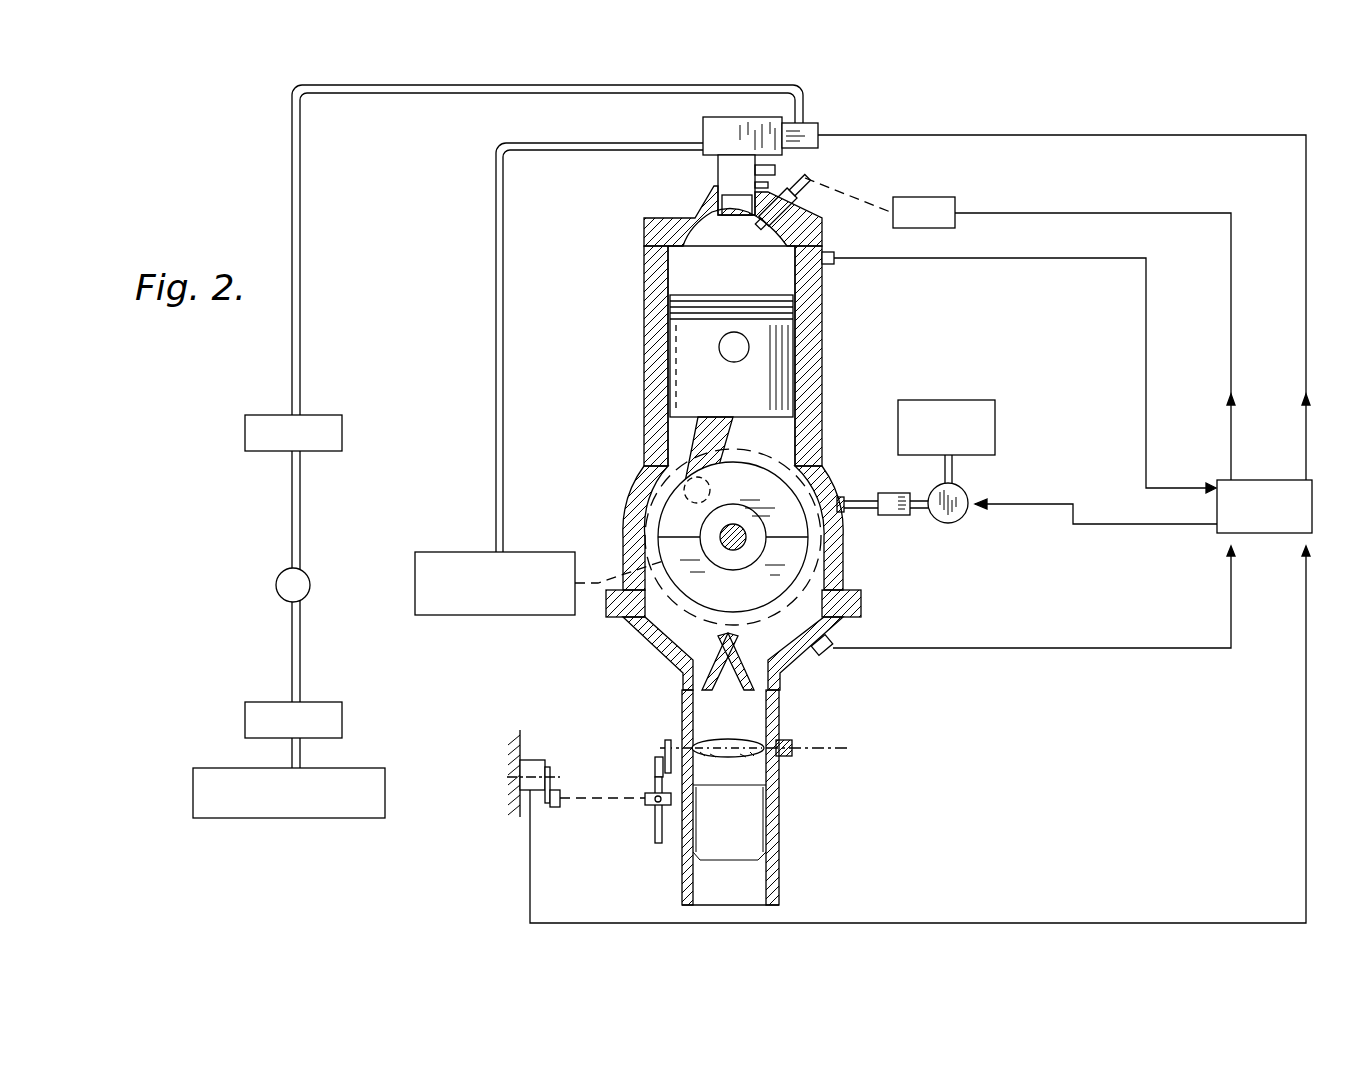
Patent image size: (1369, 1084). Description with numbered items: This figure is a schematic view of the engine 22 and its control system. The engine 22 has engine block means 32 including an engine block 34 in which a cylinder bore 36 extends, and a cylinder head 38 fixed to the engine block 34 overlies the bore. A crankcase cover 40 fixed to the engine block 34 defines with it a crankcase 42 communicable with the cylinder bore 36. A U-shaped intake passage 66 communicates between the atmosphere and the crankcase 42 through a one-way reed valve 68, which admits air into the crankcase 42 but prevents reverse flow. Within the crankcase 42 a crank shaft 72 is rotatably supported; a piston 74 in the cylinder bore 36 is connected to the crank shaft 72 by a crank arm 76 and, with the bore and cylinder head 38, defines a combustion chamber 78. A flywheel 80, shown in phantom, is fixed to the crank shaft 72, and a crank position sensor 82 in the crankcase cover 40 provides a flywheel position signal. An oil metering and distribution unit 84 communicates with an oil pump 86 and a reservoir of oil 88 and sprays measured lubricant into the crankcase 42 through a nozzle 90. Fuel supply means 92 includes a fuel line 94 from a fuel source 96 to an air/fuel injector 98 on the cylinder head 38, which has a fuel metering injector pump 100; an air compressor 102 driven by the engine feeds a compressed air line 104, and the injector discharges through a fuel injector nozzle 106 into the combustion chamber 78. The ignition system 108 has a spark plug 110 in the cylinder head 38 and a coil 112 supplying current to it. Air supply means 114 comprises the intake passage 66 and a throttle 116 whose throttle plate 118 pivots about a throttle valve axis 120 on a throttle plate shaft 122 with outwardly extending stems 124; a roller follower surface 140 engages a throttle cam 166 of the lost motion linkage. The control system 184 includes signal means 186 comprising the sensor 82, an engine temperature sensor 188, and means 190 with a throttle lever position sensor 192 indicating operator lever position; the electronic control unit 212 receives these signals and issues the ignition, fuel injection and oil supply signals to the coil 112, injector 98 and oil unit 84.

The engine 22 is at (904, 445).
The engine block means 32 is at (515, 745).
The engine block 34 is at (808, 340).
The cylinder bore 36 is at (690, 350).
The cylinder head 38 is at (644, 228).
The crankcase cover 40 is at (840, 632).
The crankcase 42 is at (644, 608).
The intake passage 66 is at (742, 890).
The one-way reed valve 68 is at (748, 675).
The crank shaft 72 is at (733, 548).
The piston 74 is at (675, 388).
The crank arm 76 is at (693, 438).
The combustion chamber 78 is at (668, 278).
The flywheel 80 is at (820, 468).
The crank position sensor 82 is at (835, 658).
The oil metering and distribution unit 84 is at (1027, 470).
The oil pump 86 is at (962, 517).
The reservoir of oil 88 is at (957, 400).
The nozzle 90 is at (846, 500).
The means for supplying fuel 92 is at (476, 451).
The fuel line 94 is at (300, 298).
The fuel source 96 is at (193, 790).
The air/fuel injector 98 is at (741, 151).
The fuel metering injector pump 100 is at (818, 125).
The air compressor 102 is at (570, 395).
The compressed air line 104 is at (496, 353).
The fuel injector nozzle 106 is at (722, 205).
The ignition system 108 is at (897, 195).
The spark plug 110 is at (790, 196).
The coil 112 is at (965, 197).
The means for supplying air 114 is at (781, 797).
The throttle 116 is at (559, 805).
The throttle plate 118 is at (745, 745).
The throttle valve axis 120 is at (855, 745).
The throttle plate shaft 122 is at (758, 797).
The throttle shaft stems 124 is at (665, 745).
The follower surface 140 is at (655, 763).
The throttle cam 166 is at (655, 830).
The control system 184 is at (921, 512).
The means for providing engine operation input signals 186 is at (915, 700).
The engine temperature sensor 188 is at (830, 268).
The means for providing a variable input signal 190 is at (505, 790).
The throttle lever position sensor 192 is at (535, 762).
The electronic control unit 212 is at (1272, 533).